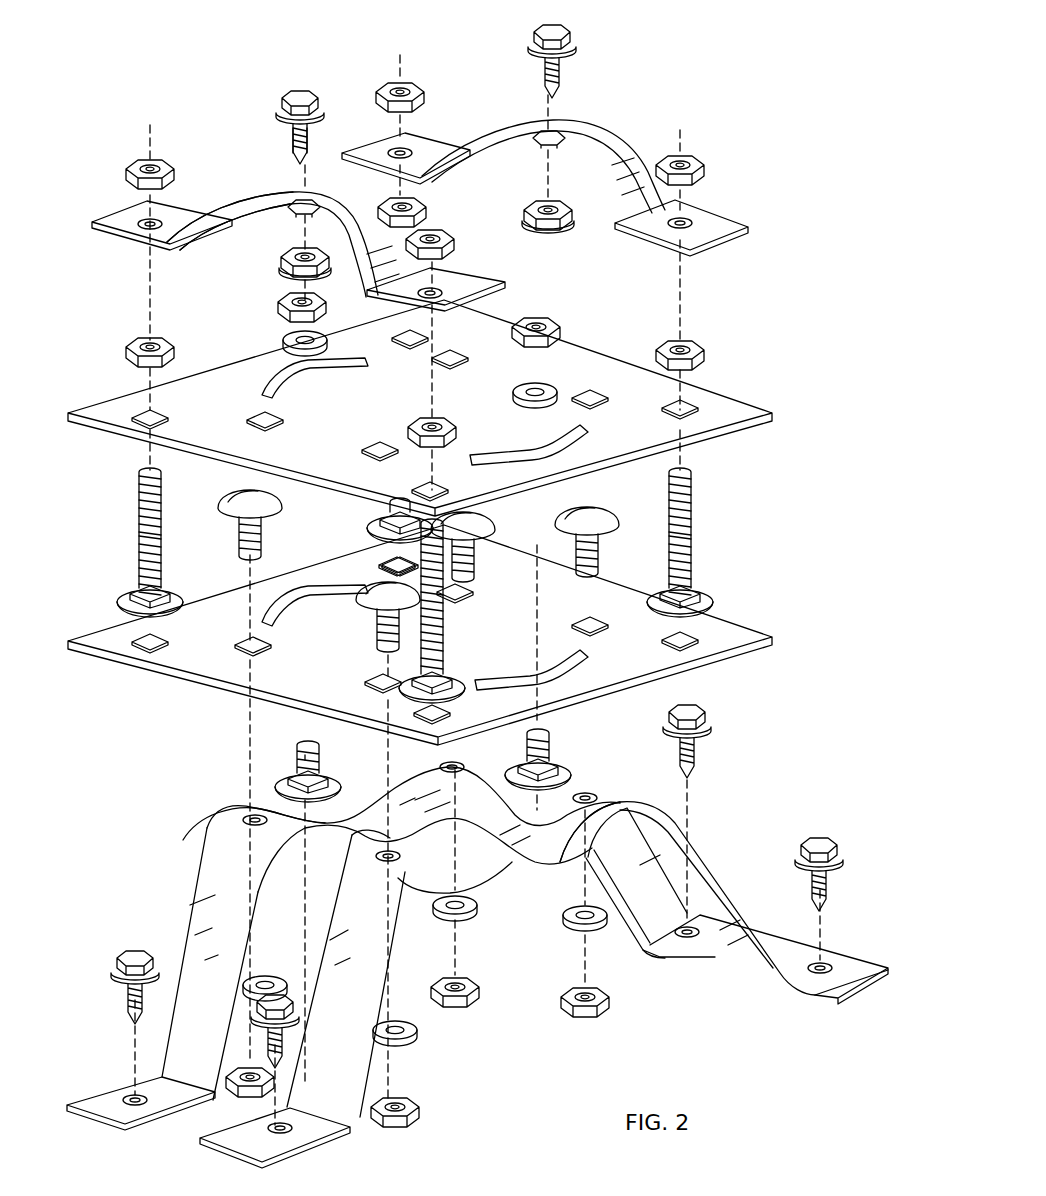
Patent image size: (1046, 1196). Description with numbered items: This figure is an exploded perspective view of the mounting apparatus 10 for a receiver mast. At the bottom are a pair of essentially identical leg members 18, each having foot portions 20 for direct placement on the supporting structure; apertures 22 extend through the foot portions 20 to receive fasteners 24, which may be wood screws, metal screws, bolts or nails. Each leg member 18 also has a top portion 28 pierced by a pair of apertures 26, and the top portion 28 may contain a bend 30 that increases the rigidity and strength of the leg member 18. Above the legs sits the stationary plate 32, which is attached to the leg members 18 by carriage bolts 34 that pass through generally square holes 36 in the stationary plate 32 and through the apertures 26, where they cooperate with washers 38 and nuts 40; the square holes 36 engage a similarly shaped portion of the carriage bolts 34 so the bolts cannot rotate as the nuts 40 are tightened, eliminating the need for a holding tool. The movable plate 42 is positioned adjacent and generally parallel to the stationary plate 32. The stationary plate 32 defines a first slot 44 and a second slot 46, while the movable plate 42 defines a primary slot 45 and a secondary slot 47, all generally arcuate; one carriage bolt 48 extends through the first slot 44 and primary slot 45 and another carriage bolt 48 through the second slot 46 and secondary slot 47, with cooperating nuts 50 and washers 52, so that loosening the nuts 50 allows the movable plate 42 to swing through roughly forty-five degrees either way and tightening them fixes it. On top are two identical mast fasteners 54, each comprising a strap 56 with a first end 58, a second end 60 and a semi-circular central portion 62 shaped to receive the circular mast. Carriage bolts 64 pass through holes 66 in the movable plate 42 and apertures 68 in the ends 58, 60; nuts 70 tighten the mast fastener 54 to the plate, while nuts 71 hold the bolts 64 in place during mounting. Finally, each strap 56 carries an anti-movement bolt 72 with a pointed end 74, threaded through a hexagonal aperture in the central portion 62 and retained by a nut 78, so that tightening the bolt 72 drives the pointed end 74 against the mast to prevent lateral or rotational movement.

The apparatus 10 is at (240, 80).
The leg member 18 is at (175, 933).
The foot portion 20 is at (108, 1097).
The aperture 22 is at (130, 1093).
The fastener 24 is at (708, 735).
The aperture 26 is at (242, 828).
The top portion 28 is at (238, 812).
The bend 30 is at (378, 808).
The stationary plate 32 is at (755, 613).
The carriage bolt 34 is at (232, 508).
The hole 36 is at (282, 420).
The washer 38 is at (478, 905).
The nut 40 is at (478, 985).
The movable plate 42 is at (735, 390).
The first slot 44 is at (300, 590).
The primary slot 45 is at (322, 374).
The second slot 46 is at (576, 665).
The secondary slot 47 is at (512, 447).
The carriage bolt 48 is at (292, 760).
The nut 50 is at (280, 305).
The washer 52 is at (283, 340).
The mast fastener 54 is at (135, 253).
The strap 56 is at (335, 203).
The first end 58 is at (138, 214).
The second end 60 is at (490, 297).
The central portion 62 is at (277, 225).
The carriage bolt 64 is at (138, 545).
The hole 66 is at (135, 412).
The aperture 68 is at (162, 220).
The nut 70 is at (148, 160).
The nut 71 is at (128, 346).
The bolt 72 is at (306, 96).
The pointed end 74 is at (292, 150).
The nut 78 is at (282, 262).